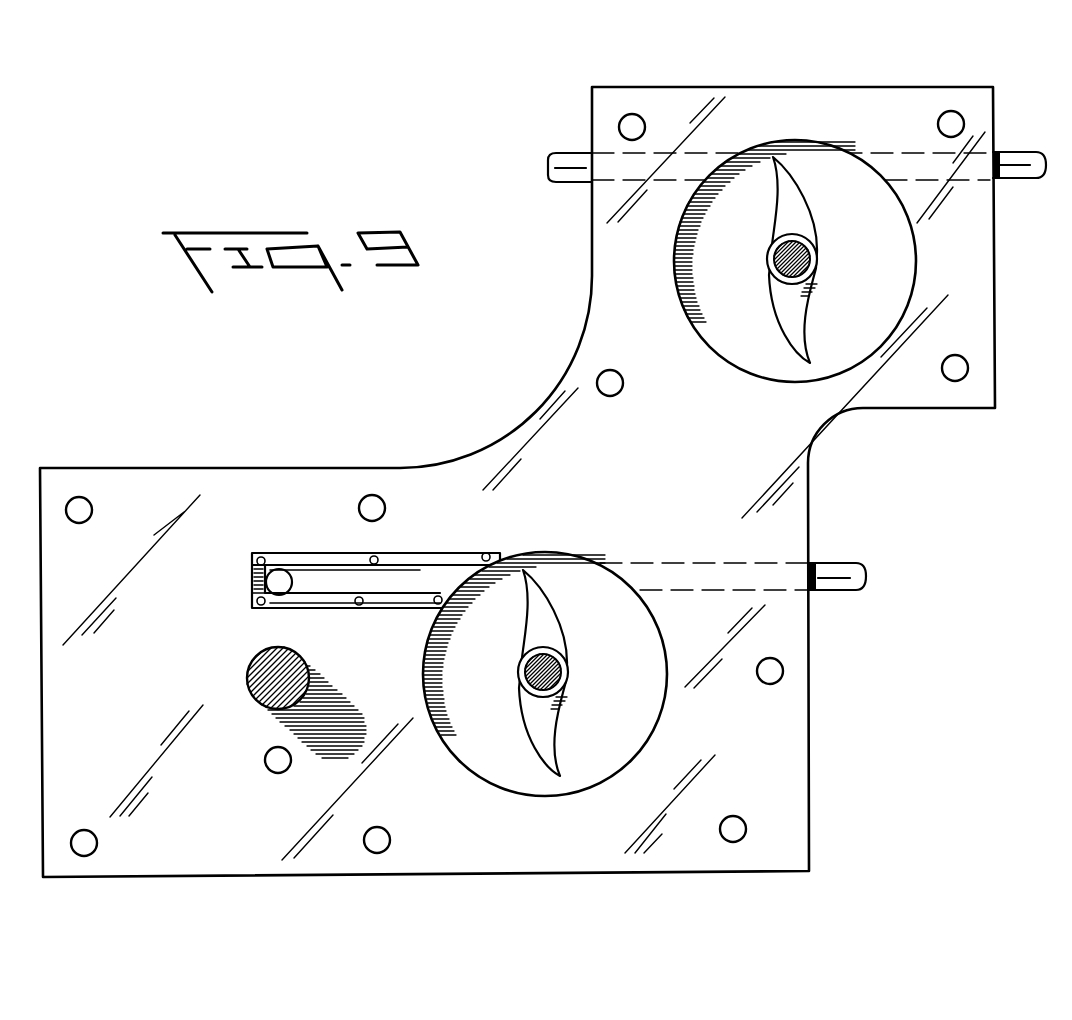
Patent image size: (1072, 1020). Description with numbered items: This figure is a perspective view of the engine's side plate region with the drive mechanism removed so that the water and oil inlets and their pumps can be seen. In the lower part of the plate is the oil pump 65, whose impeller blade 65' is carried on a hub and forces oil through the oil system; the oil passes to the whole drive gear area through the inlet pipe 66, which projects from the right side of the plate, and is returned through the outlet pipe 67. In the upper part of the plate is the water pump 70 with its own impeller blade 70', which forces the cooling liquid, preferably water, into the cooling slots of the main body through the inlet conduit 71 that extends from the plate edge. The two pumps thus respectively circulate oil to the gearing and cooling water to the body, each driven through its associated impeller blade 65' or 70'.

The oil pump 65 is at (545, 699).
The impeller blade 65' is at (579, 673).
The inlet pipe 66 is at (838, 563).
The outlet pipe 67 is at (278, 767).
The water pump 70 is at (795, 285).
The impeller blade 70' is at (833, 260).
The inlet conduit 71 is at (1022, 152).